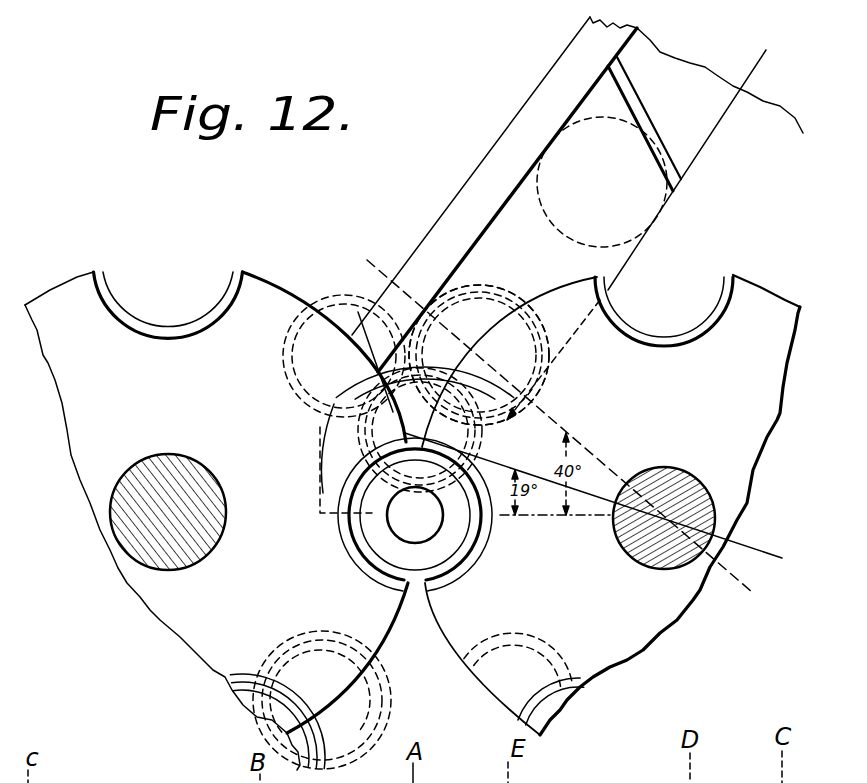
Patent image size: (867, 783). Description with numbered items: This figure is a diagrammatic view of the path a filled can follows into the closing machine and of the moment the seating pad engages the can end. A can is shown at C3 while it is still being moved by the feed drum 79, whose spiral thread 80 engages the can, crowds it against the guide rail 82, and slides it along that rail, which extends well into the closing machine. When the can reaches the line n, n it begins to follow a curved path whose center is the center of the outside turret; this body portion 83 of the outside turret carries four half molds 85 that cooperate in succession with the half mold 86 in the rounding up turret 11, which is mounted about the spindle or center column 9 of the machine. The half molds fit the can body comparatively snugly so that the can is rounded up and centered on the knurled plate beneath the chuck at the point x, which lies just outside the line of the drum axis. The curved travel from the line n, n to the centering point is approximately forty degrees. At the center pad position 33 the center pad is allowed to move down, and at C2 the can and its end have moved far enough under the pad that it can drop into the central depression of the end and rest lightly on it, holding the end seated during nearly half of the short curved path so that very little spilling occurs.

The spindle or center column 9 is at (177, 470).
The rounding up turret 11 is at (269, 521).
The center pad position 33 is at (358, 349).
The feed drum 79 is at (655, 224).
The spiral thread 80 is at (667, 145).
The guide rail 82 is at (515, 127).
The body portion of the outside turret 83 is at (611, 505).
The half molds 85 is at (658, 335).
The half mold 86 is at (167, 328).
The point X x is at (415, 515).
The line n n is at (563, 427).
The can position C2 is at (444, 365).
The can position C3 is at (537, 184).